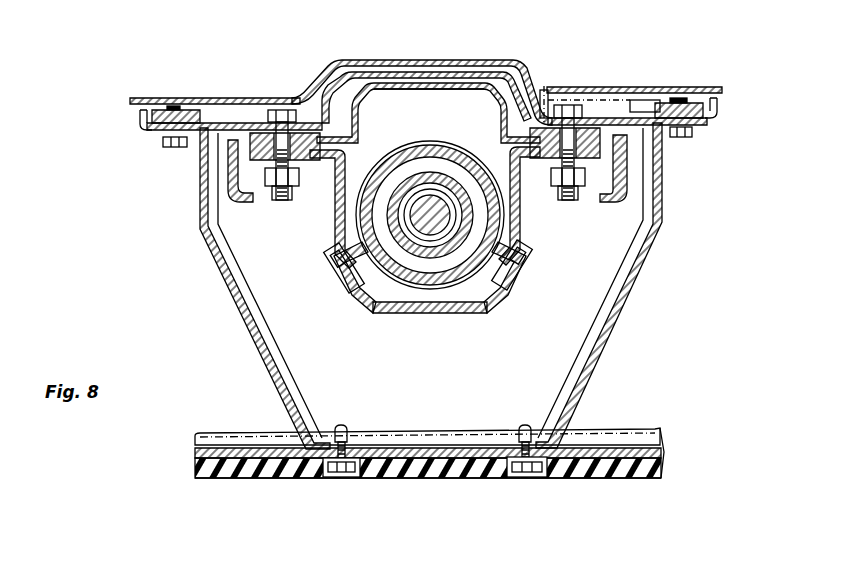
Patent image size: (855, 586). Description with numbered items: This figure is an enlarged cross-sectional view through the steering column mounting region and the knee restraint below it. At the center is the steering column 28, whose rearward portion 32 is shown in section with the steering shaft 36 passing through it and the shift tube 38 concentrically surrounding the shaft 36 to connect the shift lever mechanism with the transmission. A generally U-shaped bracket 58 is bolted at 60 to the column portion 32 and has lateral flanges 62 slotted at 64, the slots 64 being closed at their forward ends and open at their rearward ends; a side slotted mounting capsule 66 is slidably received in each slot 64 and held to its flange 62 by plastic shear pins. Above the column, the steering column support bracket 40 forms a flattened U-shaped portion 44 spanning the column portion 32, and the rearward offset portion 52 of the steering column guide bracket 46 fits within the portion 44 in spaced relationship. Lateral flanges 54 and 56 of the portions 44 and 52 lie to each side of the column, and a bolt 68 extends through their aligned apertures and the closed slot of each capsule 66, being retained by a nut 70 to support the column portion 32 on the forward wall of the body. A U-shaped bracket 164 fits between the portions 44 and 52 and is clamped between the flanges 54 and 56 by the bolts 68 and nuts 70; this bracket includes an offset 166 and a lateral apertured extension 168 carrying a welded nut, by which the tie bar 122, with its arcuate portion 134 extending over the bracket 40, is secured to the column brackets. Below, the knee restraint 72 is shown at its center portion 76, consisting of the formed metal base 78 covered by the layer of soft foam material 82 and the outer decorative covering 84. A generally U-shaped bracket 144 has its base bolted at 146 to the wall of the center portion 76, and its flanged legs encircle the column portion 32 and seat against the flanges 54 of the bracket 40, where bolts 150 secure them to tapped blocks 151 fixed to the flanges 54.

The steering column 28 is at (425, 235).
The rearward portion of the column 32 is at (507, 243).
The steering shaft 36 is at (424, 232).
The shift tube 38 is at (438, 226).
The steering column support bracket 40 is at (371, 62).
The flattened generally U-shaped portion 44 is at (416, 74).
The steering column guide bracket 46 is at (486, 84).
The rearward offset portion 52 is at (395, 103).
The lateral flanges 54 is at (188, 97).
The lateral flanges 56 is at (228, 122).
The generally U-shaped bracket 58 is at (420, 314).
The bolts 60 is at (334, 282).
The lateral flanges 62 is at (345, 154).
The slots 64 is at (306, 133).
The side slotted mounting capsule 66 is at (255, 175).
The bolt 68 is at (280, 108).
The nut 70 is at (284, 202).
The knee restraint 72 is at (423, 434).
The center portion 76 is at (500, 478).
The formed metal base 78 is at (240, 447).
The layer of soft foam material 82 is at (195, 465).
The outer decorative covering 84 is at (385, 481).
The tie bar 122 is at (422, 69).
The arcuate portion 134 is at (426, 61).
The generally U-shaped bracket 144 is at (640, 283).
The bolts 146 is at (405, 431).
The bolts 150 is at (160, 145).
The tapped blocks 151 is at (138, 122).
The U-shaped bracket 164 is at (428, 84).
The offset 166 is at (545, 92).
The lateral apertured extension 168 is at (602, 100).